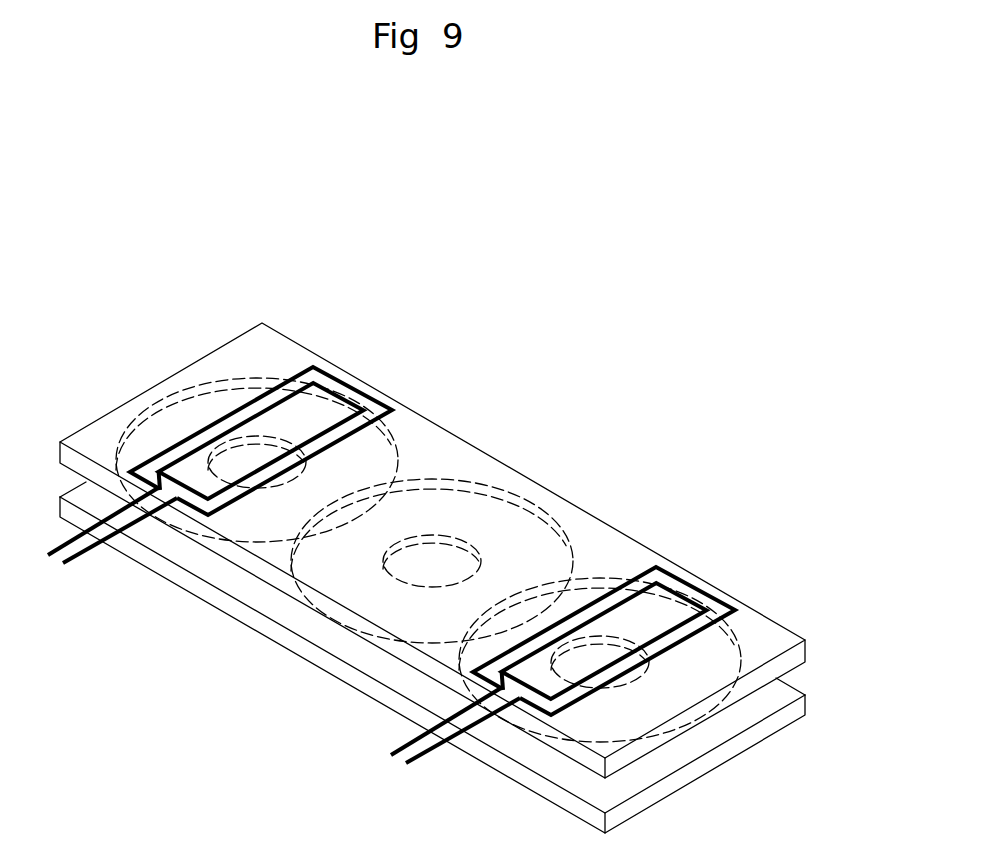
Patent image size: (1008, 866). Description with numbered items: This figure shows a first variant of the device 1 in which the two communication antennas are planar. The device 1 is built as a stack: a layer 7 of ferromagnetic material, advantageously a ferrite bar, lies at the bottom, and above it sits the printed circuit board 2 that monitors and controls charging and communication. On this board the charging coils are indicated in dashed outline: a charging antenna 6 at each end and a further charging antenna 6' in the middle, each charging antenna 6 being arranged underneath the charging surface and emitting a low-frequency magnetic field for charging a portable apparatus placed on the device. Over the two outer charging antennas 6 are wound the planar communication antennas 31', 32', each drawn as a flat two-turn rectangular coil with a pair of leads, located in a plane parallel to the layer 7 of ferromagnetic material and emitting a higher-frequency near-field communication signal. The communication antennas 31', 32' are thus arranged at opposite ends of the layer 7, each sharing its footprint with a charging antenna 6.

The device 1 is at (657, 347).
The printed circuit board 2 is at (770, 672).
The layer of ferromagnetic material 7 is at (703, 762).
The charging emitter antenna 6 is at (480, 550).
The central recess / cavity 6' is at (484, 552).
The first coil 31' is at (251, 425).
The second coil 32' is at (596, 624).